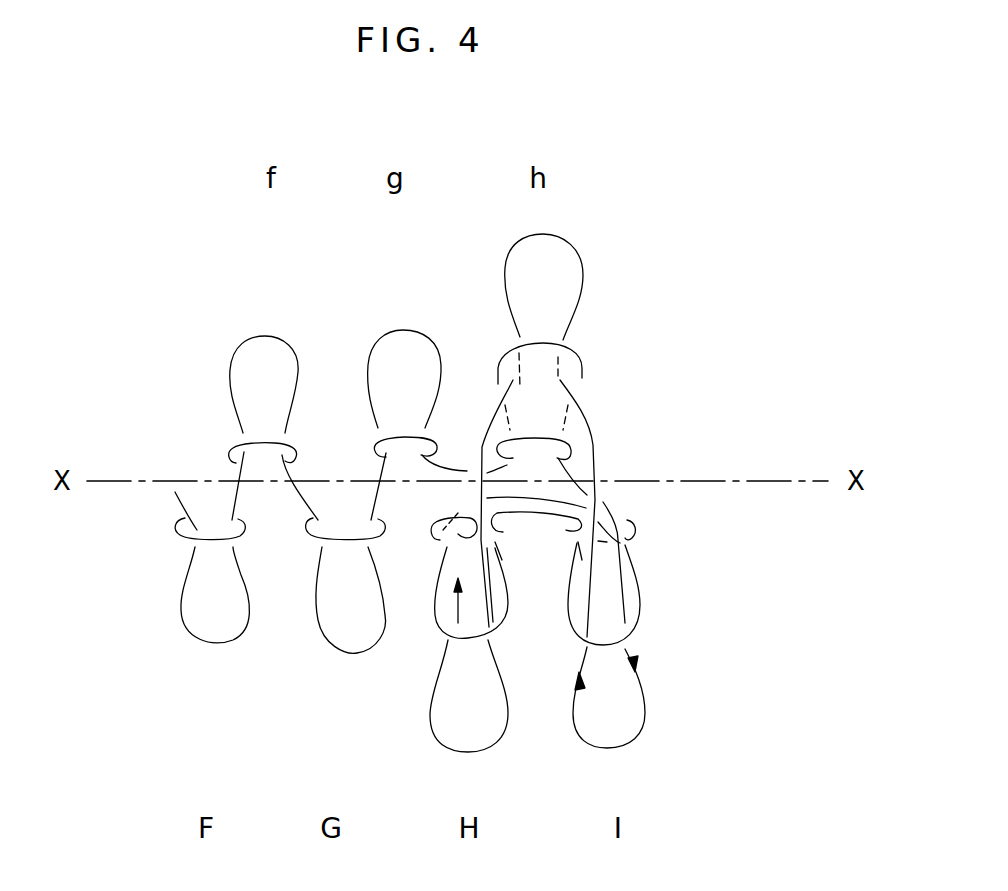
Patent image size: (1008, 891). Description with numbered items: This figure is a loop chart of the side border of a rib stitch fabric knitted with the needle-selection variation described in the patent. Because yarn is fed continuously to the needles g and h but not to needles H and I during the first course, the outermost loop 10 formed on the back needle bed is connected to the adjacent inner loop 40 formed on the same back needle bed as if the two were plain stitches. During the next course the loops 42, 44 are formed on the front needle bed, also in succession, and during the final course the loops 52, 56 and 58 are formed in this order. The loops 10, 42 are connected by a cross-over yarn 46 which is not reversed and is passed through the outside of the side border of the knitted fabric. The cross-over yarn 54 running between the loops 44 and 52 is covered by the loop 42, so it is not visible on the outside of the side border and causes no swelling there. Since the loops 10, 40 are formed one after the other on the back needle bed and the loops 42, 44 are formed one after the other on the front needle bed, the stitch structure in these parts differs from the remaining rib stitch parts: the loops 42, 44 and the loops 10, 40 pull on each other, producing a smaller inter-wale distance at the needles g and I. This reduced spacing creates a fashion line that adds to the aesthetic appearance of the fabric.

The outermost loop 10 is at (582, 373).
The adjacent inner loop 40 is at (412, 328).
The loop 42 is at (640, 613).
The loop 44 is at (435, 617).
The cross-over yarn 46 is at (570, 477).
The loop 52 is at (640, 733).
The cross-over yarn 54 is at (618, 578).
The loop 56 is at (583, 278).
The loop 58 is at (433, 722).